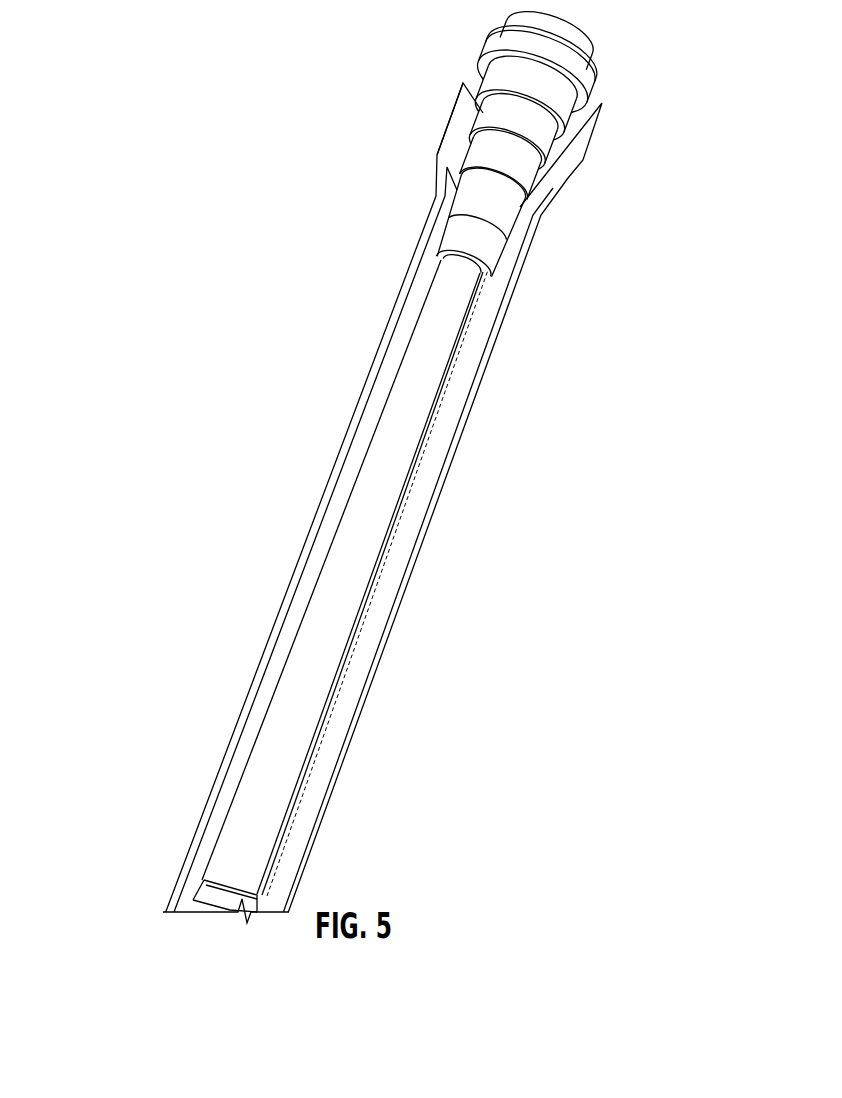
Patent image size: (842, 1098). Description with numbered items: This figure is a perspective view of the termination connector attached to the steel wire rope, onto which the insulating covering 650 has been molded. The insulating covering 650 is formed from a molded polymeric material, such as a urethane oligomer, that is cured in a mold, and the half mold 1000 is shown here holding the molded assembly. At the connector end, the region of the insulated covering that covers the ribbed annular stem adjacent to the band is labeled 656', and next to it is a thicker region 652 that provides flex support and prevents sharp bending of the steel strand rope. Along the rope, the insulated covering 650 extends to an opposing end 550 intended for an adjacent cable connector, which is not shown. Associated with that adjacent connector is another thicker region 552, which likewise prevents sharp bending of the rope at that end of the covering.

The half mold 1000 is at (402, 461).
The opposing end 550 is at (245, 828).
The other thicker region 552 is at (210, 900).
The insulating covering 650 is at (448, 312).
The thicker region 652 is at (498, 226).
The region of the insulated covering covering the ribbed annular stem 656' is at (604, 103).